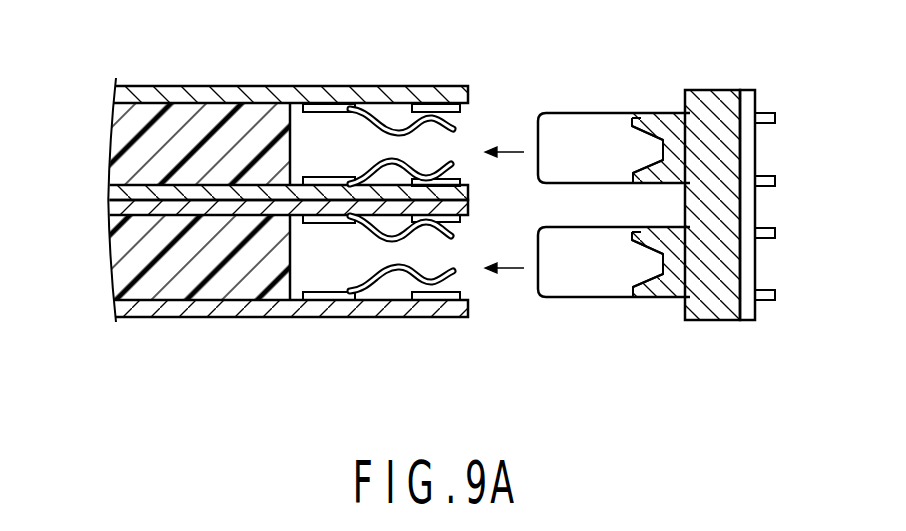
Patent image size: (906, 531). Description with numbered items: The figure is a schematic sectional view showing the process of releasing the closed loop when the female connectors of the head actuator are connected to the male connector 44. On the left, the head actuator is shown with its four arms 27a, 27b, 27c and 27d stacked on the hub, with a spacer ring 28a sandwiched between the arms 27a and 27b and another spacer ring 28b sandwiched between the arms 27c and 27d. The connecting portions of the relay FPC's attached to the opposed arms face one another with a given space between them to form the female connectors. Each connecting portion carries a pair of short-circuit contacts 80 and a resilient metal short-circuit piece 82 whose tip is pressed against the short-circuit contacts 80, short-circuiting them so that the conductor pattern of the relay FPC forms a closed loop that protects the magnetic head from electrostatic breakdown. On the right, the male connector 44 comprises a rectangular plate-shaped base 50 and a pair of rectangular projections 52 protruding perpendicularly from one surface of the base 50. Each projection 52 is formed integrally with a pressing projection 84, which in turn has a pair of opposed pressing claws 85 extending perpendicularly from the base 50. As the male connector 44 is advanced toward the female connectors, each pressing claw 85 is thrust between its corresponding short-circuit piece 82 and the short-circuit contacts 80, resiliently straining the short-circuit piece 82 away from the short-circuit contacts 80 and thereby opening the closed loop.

The arm 27a is at (265, 86).
The arm 27b is at (110, 192).
The arm 27c is at (110, 207).
The arm 27d is at (245, 317).
The spacer ring 28a is at (166, 112).
The spacer ring 28b is at (165, 285).
The short-circuit contact 80 is at (440, 104).
The short-circuit piece 82 is at (368, 110).
The projection 52 is at (550, 113).
The pressing projection 84 is at (670, 120).
The pressing claw 85 is at (655, 162).
The base 50 is at (720, 320).
The male connector 44 is at (790, 153).